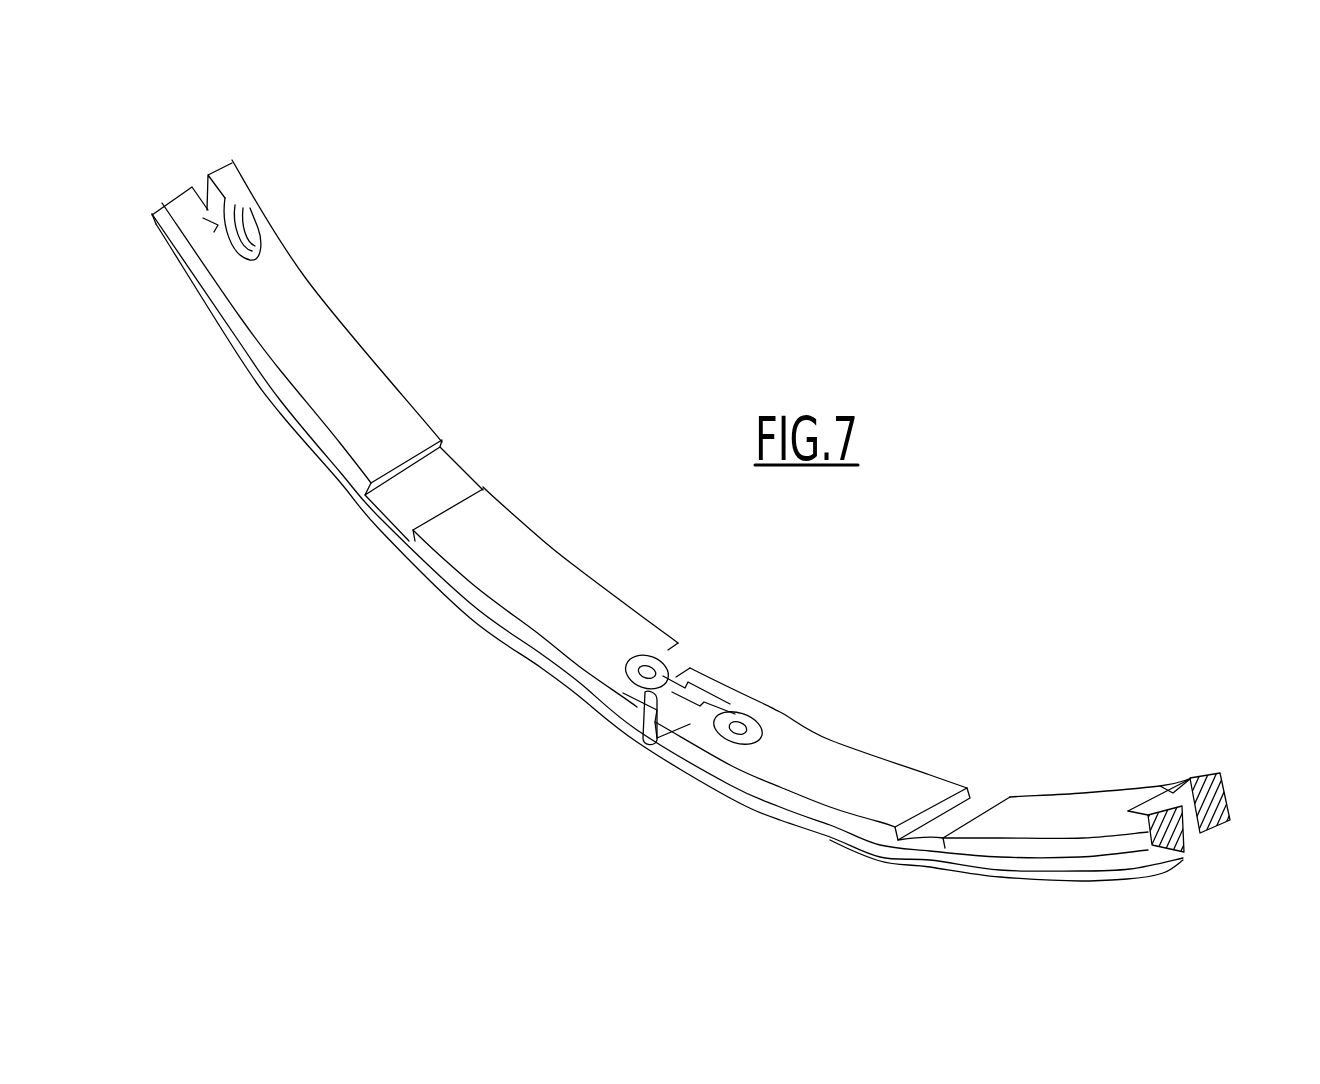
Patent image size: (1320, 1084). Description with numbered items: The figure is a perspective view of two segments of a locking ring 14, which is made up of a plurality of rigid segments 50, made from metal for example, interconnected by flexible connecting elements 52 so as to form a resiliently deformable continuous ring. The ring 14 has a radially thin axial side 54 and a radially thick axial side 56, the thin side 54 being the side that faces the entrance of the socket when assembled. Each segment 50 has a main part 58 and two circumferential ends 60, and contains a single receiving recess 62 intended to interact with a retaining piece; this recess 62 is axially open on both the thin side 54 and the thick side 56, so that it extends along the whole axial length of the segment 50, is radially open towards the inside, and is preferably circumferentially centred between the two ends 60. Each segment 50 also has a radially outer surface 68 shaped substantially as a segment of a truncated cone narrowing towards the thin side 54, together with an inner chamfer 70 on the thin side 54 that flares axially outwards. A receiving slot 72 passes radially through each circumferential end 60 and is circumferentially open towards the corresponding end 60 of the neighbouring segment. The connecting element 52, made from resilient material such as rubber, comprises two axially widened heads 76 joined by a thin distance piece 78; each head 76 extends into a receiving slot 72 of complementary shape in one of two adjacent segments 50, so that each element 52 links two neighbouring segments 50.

The locking ring 14 is at (388, 672).
The rigid segment 50 is at (418, 362).
The flexible connecting element 52 is at (675, 658).
The radially thin axial side 54 is at (335, 510).
The radially thick axial side 56 is at (586, 552).
The main part 58 is at (278, 470).
The circumferential end 60 is at (193, 155).
The receiving recess 62 is at (467, 470).
The radially outer surface 68 is at (1117, 878).
The inner chamfer 70 is at (1042, 848).
The receiving slot 72 is at (240, 220).
The axially widened head 76 is at (635, 660).
The thin distance piece 78 is at (650, 737).